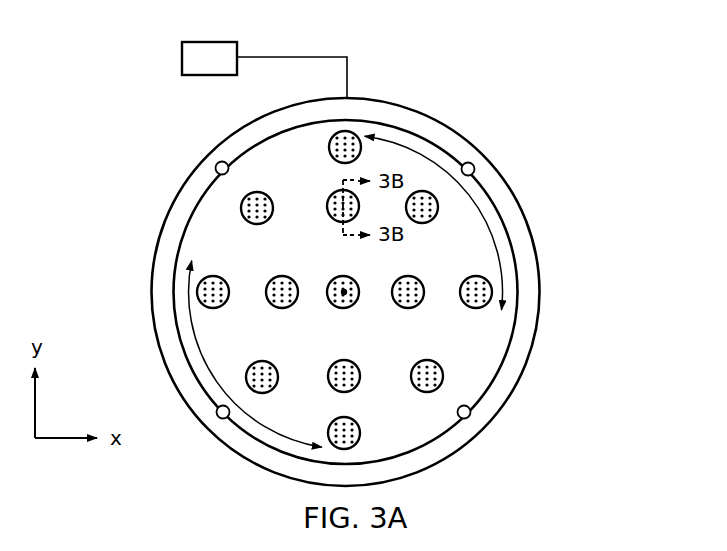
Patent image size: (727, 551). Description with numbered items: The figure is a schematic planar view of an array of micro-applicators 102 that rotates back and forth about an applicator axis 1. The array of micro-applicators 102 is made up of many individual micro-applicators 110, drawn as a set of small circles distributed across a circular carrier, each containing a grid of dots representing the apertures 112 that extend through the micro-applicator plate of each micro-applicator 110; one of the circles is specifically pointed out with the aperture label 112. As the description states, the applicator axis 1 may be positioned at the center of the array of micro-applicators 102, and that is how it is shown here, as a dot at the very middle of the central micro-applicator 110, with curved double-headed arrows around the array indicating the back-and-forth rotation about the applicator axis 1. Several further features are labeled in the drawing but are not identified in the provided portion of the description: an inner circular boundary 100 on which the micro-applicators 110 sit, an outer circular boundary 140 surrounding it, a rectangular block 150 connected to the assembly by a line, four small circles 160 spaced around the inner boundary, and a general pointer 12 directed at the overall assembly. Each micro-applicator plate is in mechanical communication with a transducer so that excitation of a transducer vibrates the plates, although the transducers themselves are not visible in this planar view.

The applicator axis 1 is at (344, 293).
The processing chamber 12 is at (565, 155).
The substrate carrier 100 is at (418, 133).
The array of micro-applicators 102 is at (203, 230).
The micro-applicators 110 is at (227, 275).
The apertures 112 is at (260, 368).
The chamber wall 140 is at (537, 237).
The controller 150 is at (180, 52).
The sensors 160 is at (469, 416).